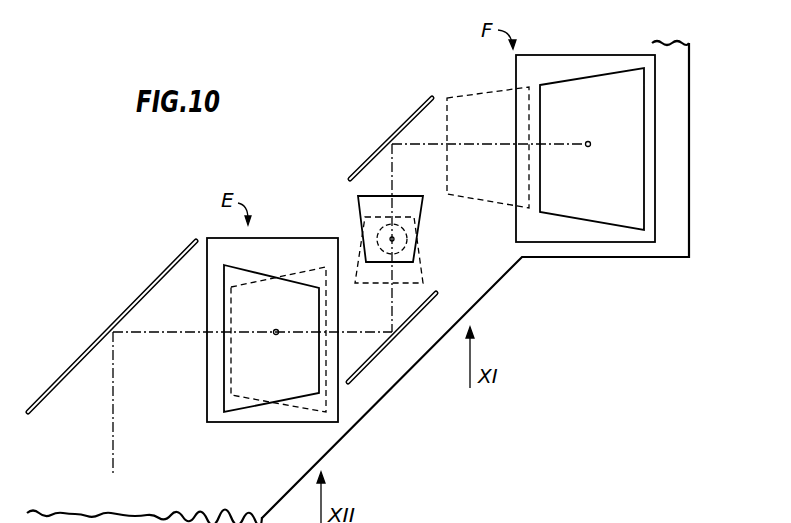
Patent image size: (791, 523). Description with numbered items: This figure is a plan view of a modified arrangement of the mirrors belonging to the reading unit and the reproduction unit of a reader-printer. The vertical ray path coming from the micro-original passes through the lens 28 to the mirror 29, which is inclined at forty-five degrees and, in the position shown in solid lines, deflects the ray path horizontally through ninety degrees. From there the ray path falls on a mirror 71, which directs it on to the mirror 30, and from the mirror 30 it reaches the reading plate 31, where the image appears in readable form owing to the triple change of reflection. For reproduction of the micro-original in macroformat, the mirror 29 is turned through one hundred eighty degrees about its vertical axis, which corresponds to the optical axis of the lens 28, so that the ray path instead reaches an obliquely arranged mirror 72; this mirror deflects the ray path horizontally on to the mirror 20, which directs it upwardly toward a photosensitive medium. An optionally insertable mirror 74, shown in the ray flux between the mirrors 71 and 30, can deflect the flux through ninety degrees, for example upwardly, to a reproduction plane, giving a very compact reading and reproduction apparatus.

The mirror 20 is at (242, 405).
The lens 28 is at (402, 241).
The mirror 29 is at (413, 205).
The mirror 30 is at (607, 82).
The reading plate 31 is at (551, 63).
The mirror 71 is at (413, 116).
The mirror 72 is at (418, 310).
The insertable mirror 74 is at (477, 102).